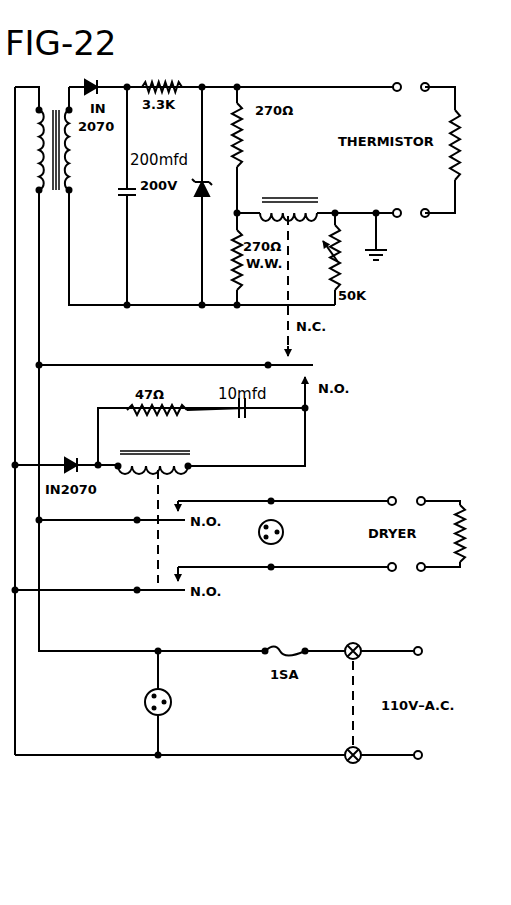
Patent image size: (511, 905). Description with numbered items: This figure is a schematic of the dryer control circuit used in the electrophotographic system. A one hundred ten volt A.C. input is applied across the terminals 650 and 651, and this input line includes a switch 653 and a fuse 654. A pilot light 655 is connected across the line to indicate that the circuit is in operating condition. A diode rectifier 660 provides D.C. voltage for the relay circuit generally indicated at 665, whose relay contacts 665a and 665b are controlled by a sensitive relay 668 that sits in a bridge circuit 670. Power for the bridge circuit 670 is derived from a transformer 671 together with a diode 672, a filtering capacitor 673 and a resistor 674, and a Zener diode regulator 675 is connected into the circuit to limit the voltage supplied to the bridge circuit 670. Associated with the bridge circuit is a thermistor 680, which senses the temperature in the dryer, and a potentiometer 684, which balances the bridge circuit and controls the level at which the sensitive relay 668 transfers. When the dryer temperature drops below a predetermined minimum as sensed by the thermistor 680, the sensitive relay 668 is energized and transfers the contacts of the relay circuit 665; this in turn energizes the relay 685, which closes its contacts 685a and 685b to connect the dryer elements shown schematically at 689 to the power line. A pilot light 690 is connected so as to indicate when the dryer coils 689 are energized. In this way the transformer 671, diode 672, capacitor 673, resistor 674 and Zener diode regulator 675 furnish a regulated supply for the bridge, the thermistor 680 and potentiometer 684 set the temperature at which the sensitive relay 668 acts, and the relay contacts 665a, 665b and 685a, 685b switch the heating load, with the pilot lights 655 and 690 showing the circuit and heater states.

The terminal 650 is at (405, 647).
The terminal 651 is at (373, 761).
The switch 653 is at (354, 643).
The fuse 654 is at (292, 646).
The pilot light 655 is at (155, 678).
The diode rectifier 660 is at (68, 455).
The relay circuit 665 is at (318, 420).
The relay contact 665a is at (310, 350).
The relay contact 665b is at (313, 375).
The sensitive relay 668 is at (299, 204).
The bridge circuit 670 is at (272, 84).
The transformer 671 is at (78, 188).
The diode 672 is at (90, 80).
The filtering capacitor 673 is at (133, 197).
The resistor 674 is at (164, 80).
The Zener diode regulator 675 is at (213, 190).
The thermistor 680 is at (450, 172).
The potentiometer 684 is at (343, 260).
The relay 685 is at (165, 452).
The relay contact 685a is at (146, 528).
The relay contact 685b is at (150, 588).
The dryer elements 689 is at (477, 492).
The pilot light 690 is at (283, 531).